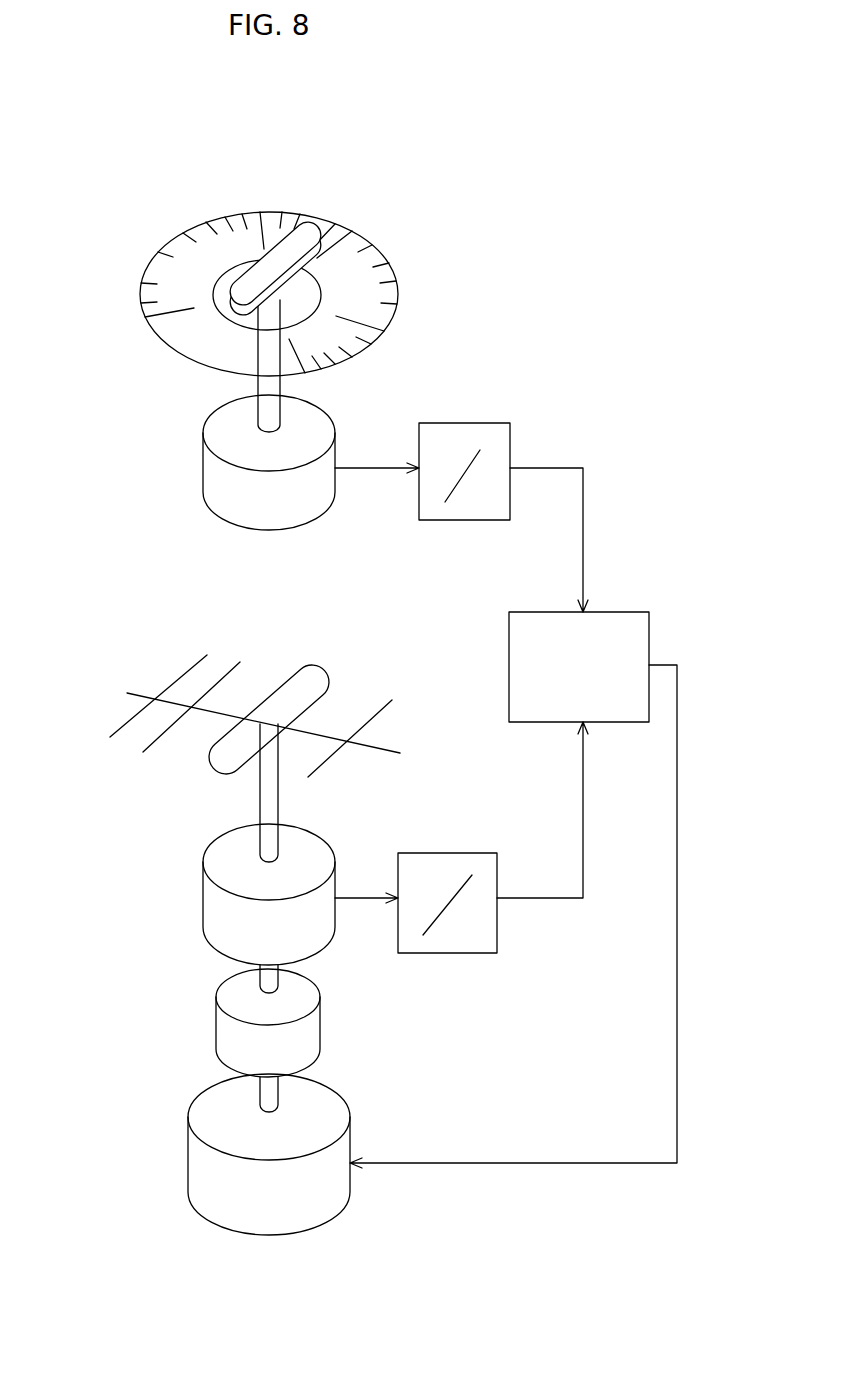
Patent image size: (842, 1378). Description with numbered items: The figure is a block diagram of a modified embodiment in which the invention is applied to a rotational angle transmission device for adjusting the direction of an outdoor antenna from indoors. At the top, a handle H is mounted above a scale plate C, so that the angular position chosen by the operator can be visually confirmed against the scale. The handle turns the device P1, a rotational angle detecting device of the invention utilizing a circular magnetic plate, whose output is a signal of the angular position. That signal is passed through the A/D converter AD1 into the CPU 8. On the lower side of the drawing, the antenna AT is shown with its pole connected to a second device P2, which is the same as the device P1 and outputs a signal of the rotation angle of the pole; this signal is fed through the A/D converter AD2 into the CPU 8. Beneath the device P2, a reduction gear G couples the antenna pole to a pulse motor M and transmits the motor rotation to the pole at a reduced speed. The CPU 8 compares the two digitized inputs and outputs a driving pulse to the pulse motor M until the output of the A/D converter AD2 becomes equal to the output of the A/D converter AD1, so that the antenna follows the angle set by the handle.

The scale plate C is at (170, 262).
The handle H is at (312, 228).
The device P1 is at (203, 468).
The A/D converter AD1 is at (465, 423).
The CPU 8 is at (632, 612).
The antenna AT is at (185, 672).
The device P2 is at (203, 903).
The A/D converter AD2 is at (460, 953).
The reduction gear G is at (217, 1020).
The pulse motor M is at (322, 1227).